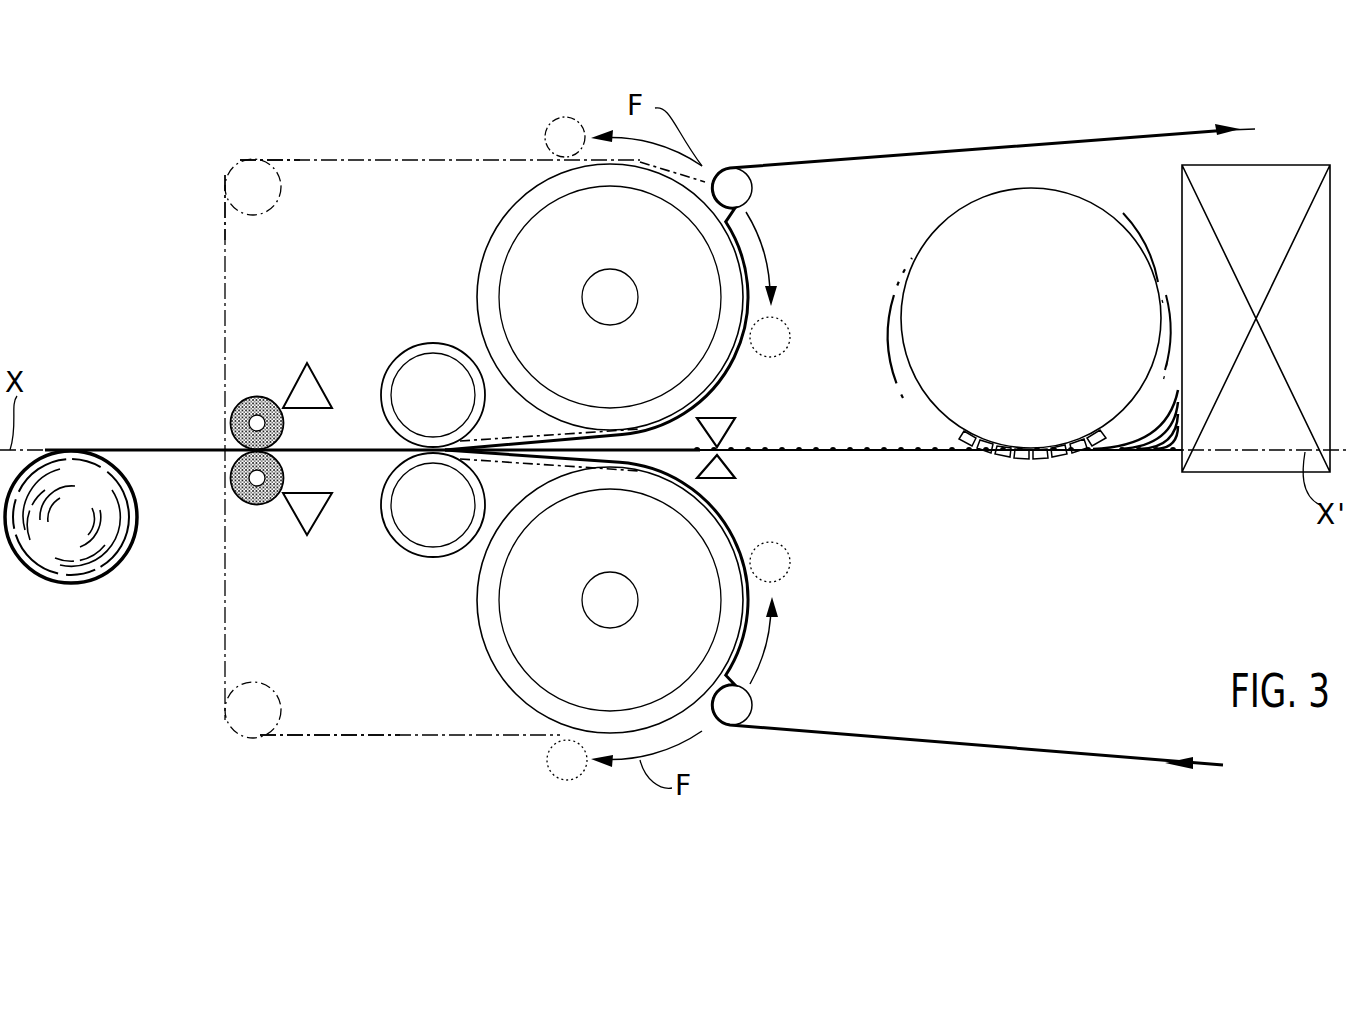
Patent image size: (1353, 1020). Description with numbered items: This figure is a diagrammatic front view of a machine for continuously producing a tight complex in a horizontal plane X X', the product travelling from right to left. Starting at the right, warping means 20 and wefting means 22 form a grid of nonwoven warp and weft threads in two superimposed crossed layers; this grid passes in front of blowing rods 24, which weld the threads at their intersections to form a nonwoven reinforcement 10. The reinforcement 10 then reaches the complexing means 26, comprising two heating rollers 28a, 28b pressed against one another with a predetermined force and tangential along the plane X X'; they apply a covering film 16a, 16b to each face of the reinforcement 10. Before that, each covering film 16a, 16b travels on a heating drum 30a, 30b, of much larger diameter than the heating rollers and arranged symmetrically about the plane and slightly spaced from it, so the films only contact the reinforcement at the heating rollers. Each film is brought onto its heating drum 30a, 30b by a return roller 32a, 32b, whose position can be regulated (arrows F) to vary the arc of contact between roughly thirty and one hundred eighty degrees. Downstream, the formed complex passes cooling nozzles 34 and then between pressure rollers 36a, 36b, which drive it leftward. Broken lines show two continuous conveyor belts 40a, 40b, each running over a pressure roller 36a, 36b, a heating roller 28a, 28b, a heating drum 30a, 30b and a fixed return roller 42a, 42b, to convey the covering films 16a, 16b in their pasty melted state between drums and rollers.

The nonwoven reinforcement 10 is at (884, 458).
The covering film 16a is at (550, 440).
The covering film 16b is at (530, 460).
The warping means 20 is at (1192, 472).
The wefting means 22 is at (1102, 422).
The blowing rods 24 is at (730, 472).
The complexing means 26 is at (379, 448).
The heating roller 28a is at (440, 372).
The heating roller 28b is at (415, 520).
The heating drum 30a is at (503, 215).
The heating drum 30b is at (493, 665).
The return roller 32a is at (736, 190).
The return roller 32b is at (738, 710).
The cooling nozzles 34 is at (312, 392).
The pressure roller 36a is at (238, 412).
The pressure roller 36b is at (240, 492).
The continuous conveyor belt 40a is at (225, 282).
The continuous conveyor belt 40b is at (345, 740).
The fixed return roller 42a is at (232, 162).
The fixed return roller 42b is at (232, 725).